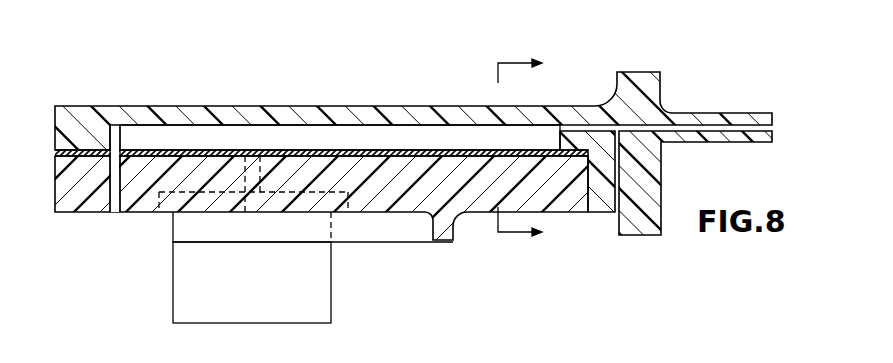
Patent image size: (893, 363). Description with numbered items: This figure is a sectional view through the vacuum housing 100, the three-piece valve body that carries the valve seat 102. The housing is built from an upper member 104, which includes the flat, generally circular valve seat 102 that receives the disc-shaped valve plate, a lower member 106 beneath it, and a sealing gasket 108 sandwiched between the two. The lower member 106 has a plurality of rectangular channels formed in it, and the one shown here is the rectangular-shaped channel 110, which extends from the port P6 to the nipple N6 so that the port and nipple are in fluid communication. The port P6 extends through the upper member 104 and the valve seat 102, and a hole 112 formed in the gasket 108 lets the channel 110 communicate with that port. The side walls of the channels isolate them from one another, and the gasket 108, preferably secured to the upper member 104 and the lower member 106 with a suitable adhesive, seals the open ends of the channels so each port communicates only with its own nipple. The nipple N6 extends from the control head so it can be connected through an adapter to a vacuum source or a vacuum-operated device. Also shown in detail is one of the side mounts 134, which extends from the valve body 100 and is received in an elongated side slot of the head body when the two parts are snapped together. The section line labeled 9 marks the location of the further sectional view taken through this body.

The probe/flow body 100 is at (414, 253).
The protruding portion 102 is at (360, 213).
The mounting ring 104 is at (578, 196).
The upper plate 106 is at (406, 106).
The thin layer 108 is at (281, 148).
The cavity 110 is at (190, 134).
The slot 112 is at (116, 150).
The lower block 134 is at (198, 277).
The nozzle N6 is at (738, 113).
The port P6 is at (116, 205).
The section line 9- 9 is at (526, 148).